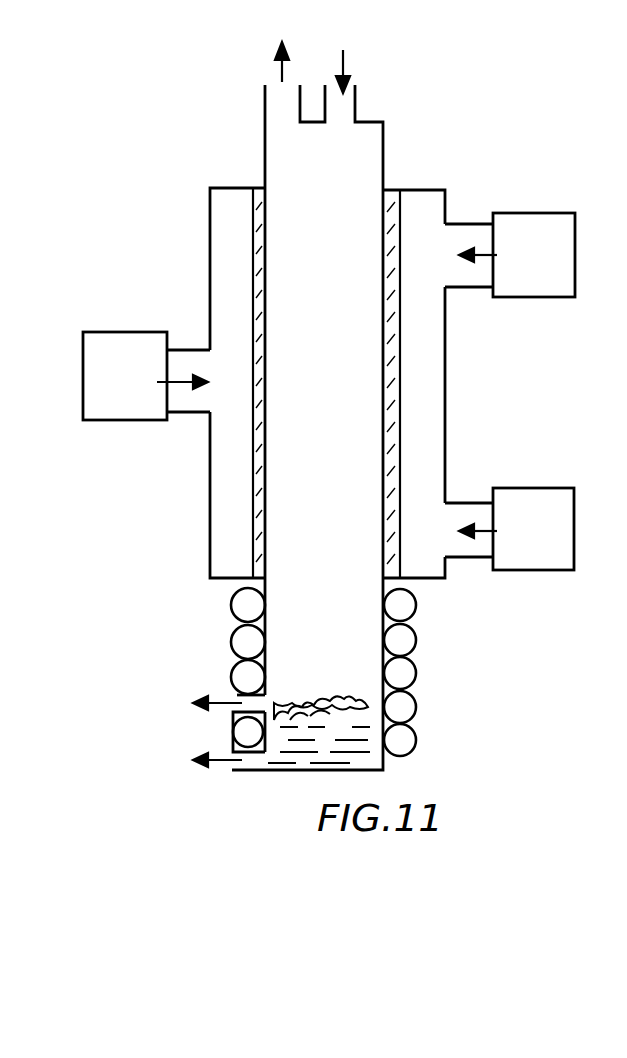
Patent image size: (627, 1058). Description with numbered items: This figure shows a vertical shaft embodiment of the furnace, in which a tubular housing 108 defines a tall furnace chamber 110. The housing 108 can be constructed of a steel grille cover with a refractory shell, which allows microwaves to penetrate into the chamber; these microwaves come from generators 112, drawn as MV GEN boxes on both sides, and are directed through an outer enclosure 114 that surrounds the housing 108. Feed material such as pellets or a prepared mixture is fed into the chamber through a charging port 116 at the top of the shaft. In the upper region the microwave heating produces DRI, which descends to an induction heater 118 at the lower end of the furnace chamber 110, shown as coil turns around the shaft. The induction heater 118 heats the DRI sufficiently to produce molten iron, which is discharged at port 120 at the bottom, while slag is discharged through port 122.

The tubular housing 108 is at (248, 232).
The furnace chamber 110 is at (342, 257).
The microwave generators 112 is at (137, 332).
The outer enclosure 114 is at (215, 510).
The charging port 116 is at (357, 102).
The induction heater 118 is at (402, 677).
The molten iron discharge port 120 is at (222, 768).
The slag discharge port 122 is at (222, 697).